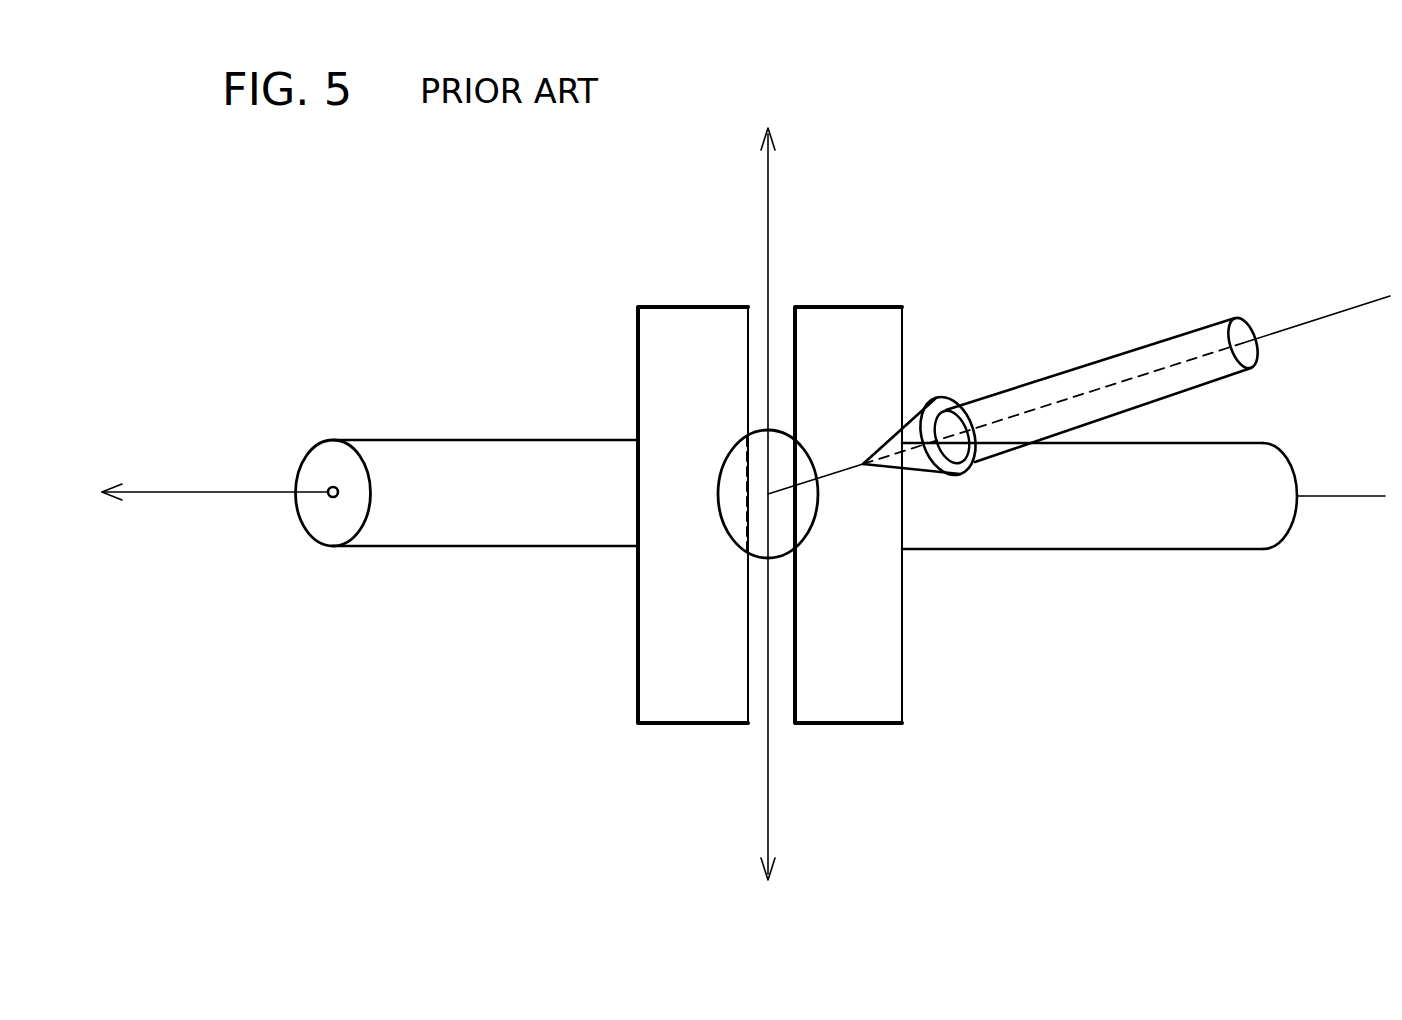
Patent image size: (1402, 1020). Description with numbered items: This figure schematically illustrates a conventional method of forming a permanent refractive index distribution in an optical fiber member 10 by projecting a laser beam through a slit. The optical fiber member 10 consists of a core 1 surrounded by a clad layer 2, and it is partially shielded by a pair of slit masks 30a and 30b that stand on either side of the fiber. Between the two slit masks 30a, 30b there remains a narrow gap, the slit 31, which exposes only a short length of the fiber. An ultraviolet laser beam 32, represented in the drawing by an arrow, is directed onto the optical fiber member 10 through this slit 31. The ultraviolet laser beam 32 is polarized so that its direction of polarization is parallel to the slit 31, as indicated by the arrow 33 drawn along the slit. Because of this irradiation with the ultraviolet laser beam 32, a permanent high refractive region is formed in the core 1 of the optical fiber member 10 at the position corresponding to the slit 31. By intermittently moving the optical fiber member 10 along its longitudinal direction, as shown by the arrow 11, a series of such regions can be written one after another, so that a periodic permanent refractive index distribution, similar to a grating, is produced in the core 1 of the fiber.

The core 1 is at (325, 502).
The clad layer 2 is at (337, 520).
The optical fiber member 10 is at (814, 557).
The arrow 11 is at (189, 491).
The slit mask 30a is at (668, 322).
The slit mask 30b is at (847, 322).
The slit 31 is at (782, 697).
The ultraviolet laser beam 32 is at (1120, 355).
The arrow 33 is at (771, 168).